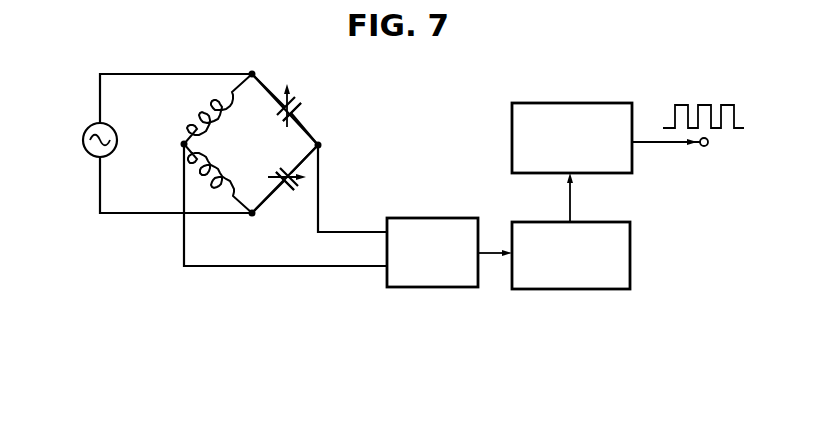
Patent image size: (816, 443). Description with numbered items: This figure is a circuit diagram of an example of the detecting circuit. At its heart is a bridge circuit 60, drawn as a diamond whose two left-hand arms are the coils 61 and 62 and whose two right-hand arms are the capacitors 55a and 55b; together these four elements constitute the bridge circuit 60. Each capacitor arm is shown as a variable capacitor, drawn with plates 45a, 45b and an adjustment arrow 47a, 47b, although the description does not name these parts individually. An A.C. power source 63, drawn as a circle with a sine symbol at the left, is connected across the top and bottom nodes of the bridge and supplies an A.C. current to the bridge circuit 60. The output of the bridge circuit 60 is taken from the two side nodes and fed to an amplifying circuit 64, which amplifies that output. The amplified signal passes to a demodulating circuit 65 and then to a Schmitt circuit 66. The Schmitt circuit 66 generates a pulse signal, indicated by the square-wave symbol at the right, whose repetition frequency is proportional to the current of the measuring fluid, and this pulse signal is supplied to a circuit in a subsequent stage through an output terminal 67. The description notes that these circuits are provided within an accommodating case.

The bridge circuit 60 is at (272, 76).
The coil 61 is at (207, 112).
The coil 62 is at (203, 180).
The A.C. power source 63 is at (92, 125).
The variable capacitor 45a is at (281, 112).
The variable capacitor 45b is at (287, 191).
The capacitor adjustment 47a is at (298, 113).
The capacitor adjustment 47b is at (292, 166).
The capacitor 55a is at (309, 98).
The capacitor 55b is at (300, 204).
The amplifying circuit 64 is at (440, 288).
The demodulating circuit 65 is at (575, 289).
The Schmitt circuit 66 is at (579, 102).
The output terminal 67 is at (703, 147).